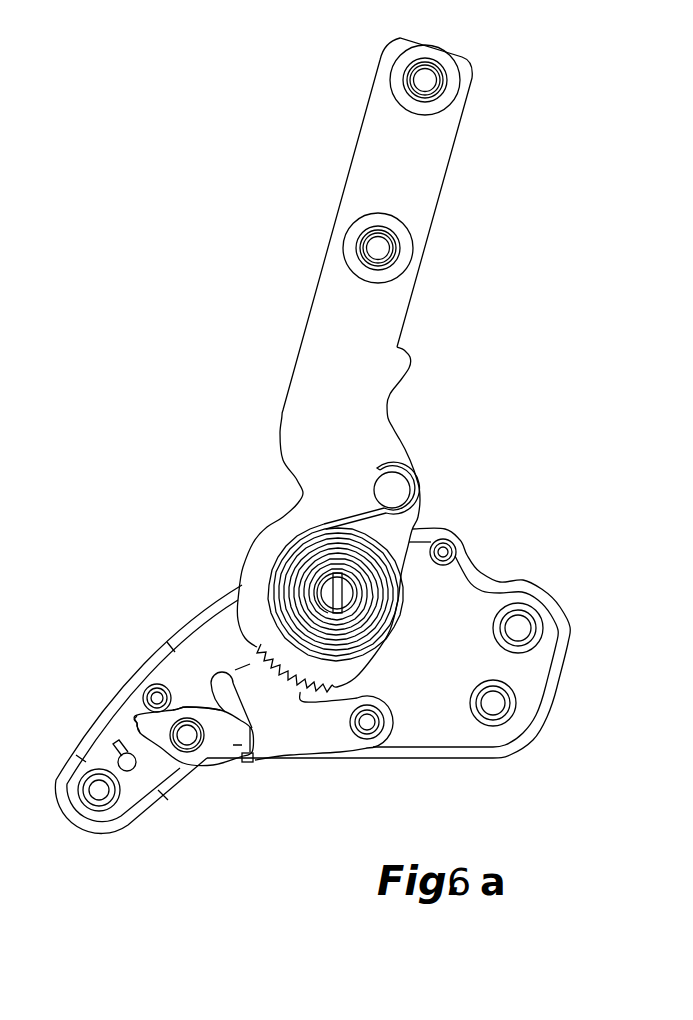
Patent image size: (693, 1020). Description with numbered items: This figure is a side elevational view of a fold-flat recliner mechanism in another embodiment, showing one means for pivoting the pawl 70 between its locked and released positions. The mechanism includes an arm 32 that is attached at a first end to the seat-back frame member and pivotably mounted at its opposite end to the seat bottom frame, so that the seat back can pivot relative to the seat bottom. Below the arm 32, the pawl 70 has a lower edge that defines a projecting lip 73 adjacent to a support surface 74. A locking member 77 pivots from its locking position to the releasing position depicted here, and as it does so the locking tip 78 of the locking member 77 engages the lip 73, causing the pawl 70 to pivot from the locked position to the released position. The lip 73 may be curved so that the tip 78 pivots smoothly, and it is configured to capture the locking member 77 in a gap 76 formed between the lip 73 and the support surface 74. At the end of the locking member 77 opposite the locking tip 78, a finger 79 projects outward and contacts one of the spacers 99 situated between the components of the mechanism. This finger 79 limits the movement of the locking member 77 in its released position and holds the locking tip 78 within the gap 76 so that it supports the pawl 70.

The arm 32 is at (305, 402).
The pawl 70 is at (342, 740).
The projecting lip 73 is at (247, 754).
The support surface 74 is at (205, 708).
The gap 76 is at (250, 720).
The locking member 77 is at (208, 754).
The locking tip 78 is at (238, 760).
The finger 79 is at (137, 728).
The spacer 99 is at (157, 684).